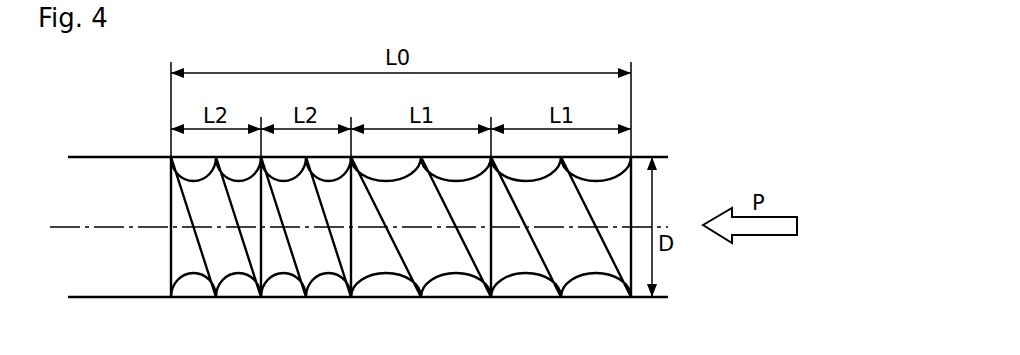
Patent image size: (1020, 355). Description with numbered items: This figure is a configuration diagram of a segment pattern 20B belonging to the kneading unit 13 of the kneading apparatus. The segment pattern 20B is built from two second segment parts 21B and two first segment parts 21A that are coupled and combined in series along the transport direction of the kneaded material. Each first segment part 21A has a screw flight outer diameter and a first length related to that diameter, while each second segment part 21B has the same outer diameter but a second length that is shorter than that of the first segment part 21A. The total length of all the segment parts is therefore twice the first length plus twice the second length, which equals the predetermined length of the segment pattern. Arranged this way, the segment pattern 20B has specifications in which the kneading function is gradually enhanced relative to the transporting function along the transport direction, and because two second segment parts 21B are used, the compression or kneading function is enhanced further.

The segment pattern 20B is at (410, 175).
The kneading unit 13 is at (646, 146).
The first segment part 21A is at (441, 274).
The second segment part 21B is at (233, 275).